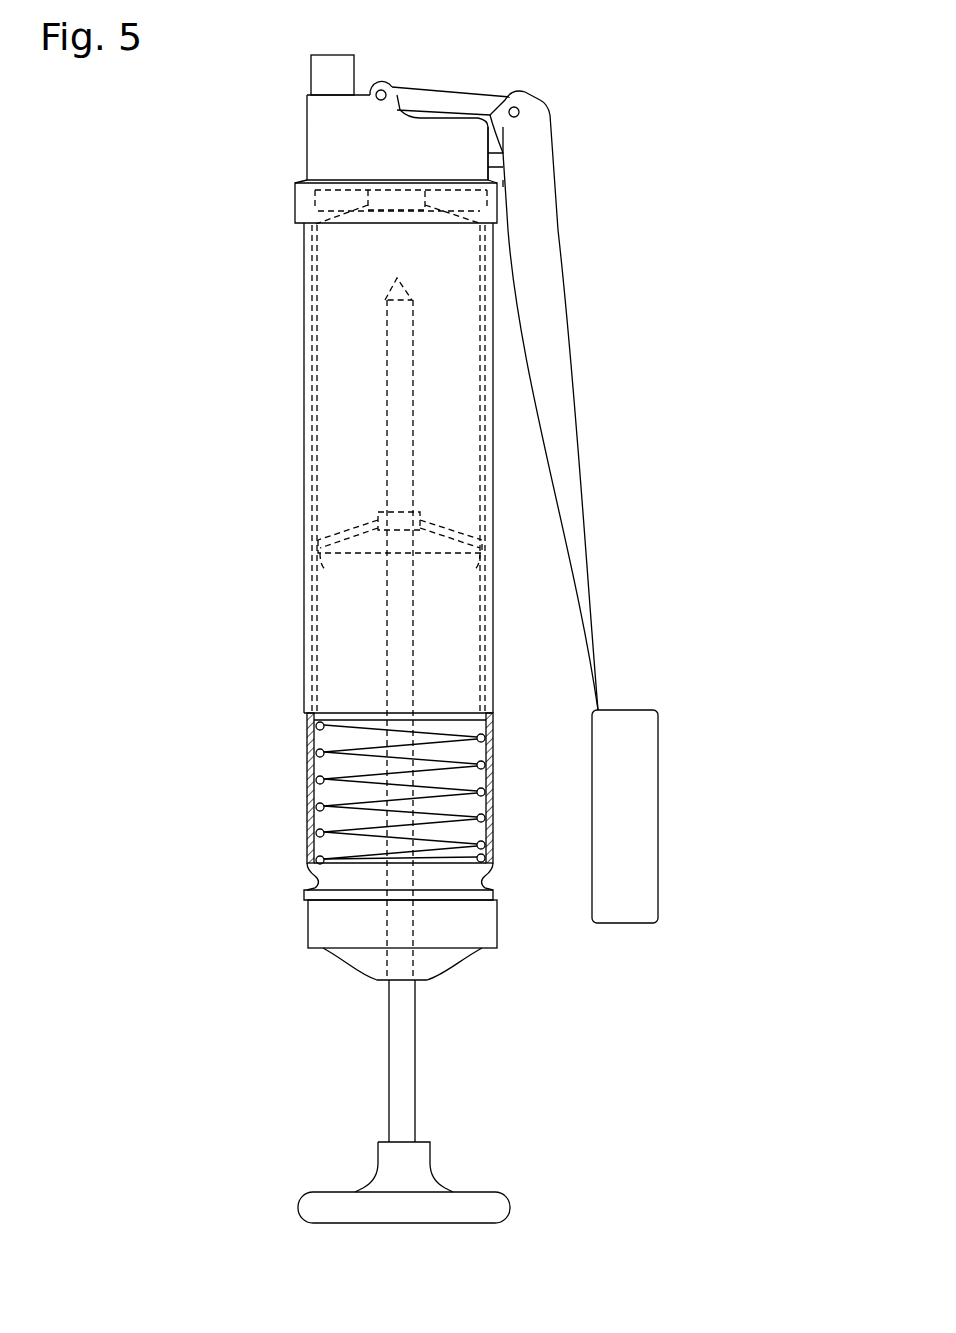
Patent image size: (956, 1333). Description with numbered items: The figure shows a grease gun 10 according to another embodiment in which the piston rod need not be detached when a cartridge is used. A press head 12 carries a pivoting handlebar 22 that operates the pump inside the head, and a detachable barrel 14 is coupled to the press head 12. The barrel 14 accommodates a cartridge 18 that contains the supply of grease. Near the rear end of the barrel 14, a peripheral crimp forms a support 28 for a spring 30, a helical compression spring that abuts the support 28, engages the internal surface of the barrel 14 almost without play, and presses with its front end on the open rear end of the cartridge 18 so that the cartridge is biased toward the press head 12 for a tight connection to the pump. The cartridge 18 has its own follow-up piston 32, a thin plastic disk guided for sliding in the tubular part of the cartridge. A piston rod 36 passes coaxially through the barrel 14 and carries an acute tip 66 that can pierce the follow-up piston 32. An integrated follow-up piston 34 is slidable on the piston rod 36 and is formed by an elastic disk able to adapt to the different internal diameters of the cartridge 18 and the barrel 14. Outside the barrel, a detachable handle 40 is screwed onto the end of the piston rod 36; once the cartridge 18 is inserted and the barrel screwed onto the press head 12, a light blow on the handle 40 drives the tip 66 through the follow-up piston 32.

The grease gun 10 is at (195, 530).
The press head 12 is at (307, 142).
The barrel 14 is at (304, 383).
The cartridge 18 is at (310, 735).
The handlebar 22 is at (583, 386).
The support 28 is at (312, 880).
The spring 30 is at (312, 808).
The follow-up piston 32 is at (428, 530).
The integrated follow-up piston 34 is at (453, 555).
The piston rod 36 is at (390, 1080).
The handle 40 is at (500, 1205).
The tip 66 is at (392, 290).